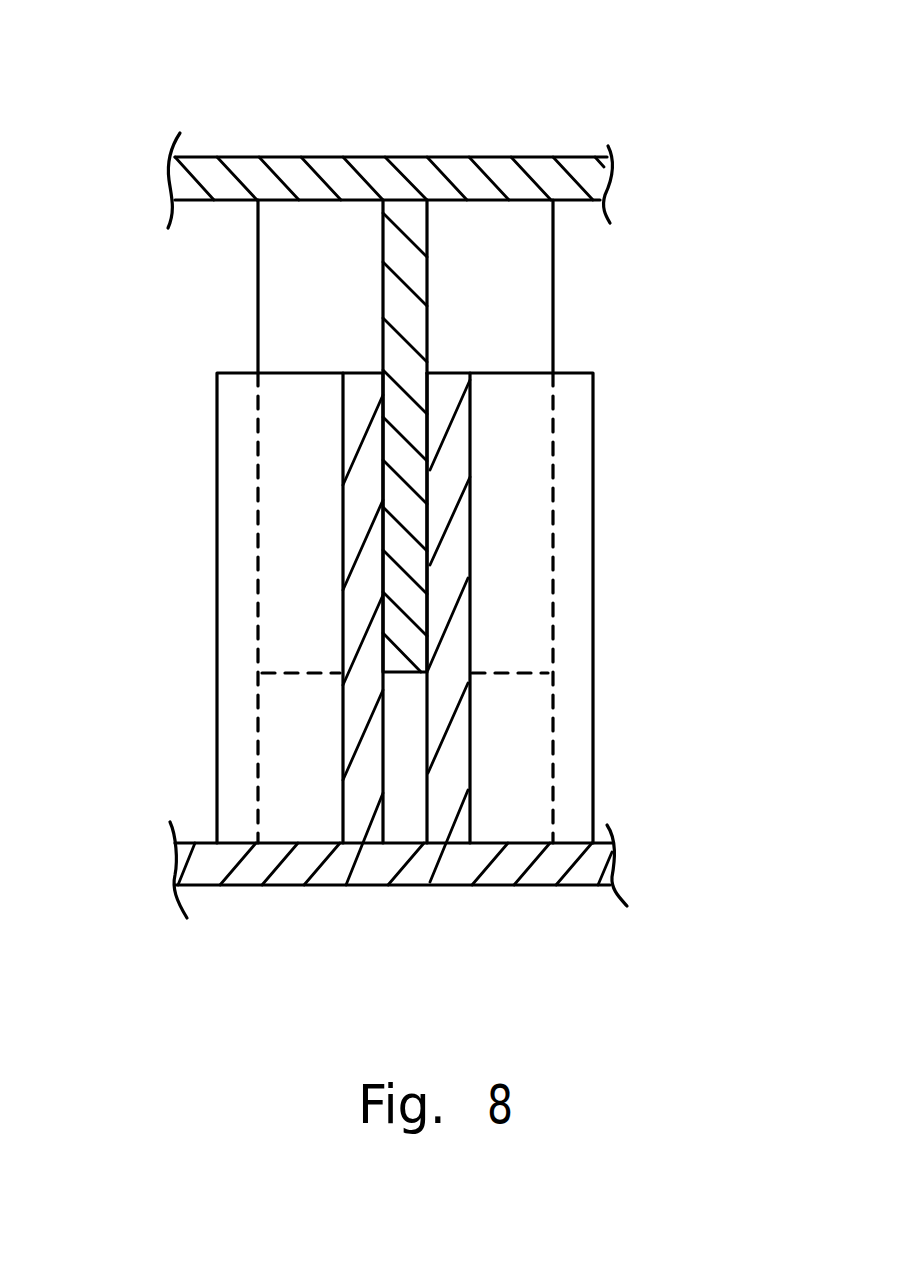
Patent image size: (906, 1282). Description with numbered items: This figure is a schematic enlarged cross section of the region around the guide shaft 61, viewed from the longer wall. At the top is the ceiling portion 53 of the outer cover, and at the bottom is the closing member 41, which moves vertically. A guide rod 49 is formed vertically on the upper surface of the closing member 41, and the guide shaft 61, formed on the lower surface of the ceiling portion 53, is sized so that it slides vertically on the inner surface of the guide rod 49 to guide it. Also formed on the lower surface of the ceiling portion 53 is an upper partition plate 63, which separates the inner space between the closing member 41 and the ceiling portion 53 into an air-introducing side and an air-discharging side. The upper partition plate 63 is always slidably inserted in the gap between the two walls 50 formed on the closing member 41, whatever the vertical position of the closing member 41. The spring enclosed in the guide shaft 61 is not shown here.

The closing member 41 is at (540, 878).
The guide rod 49 is at (577, 566).
The walls 50 is at (368, 590).
The ceiling portion 53 is at (504, 157).
The guide shaft 61 is at (538, 322).
The upper partition plate 63 is at (407, 641).